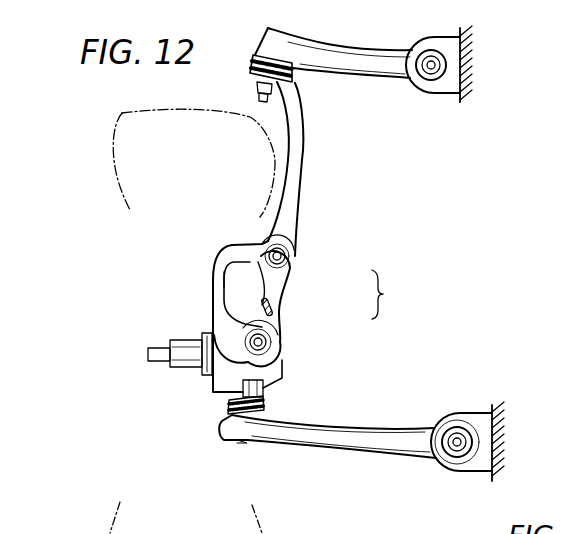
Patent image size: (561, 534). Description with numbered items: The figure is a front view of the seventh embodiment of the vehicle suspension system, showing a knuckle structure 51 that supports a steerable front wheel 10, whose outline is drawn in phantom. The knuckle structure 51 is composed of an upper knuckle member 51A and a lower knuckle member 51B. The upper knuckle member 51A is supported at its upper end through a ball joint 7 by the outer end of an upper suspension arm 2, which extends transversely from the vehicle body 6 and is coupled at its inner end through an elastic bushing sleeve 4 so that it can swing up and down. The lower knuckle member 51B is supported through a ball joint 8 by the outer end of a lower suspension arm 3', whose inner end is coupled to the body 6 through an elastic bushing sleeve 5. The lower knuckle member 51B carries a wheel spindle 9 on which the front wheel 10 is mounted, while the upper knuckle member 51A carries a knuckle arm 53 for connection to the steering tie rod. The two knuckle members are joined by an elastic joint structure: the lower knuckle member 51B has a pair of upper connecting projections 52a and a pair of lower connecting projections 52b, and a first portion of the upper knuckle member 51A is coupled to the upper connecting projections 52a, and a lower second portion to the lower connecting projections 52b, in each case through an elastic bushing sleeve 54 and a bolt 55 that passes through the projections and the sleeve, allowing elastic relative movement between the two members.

The upper suspension arm 2 is at (362, 73).
The lower suspension arm 3' is at (355, 428).
The elastic bushing sleeve 4 is at (422, 75).
The elastic bushing sleeve 5 is at (443, 450).
The body 6 is at (470, 58).
The ball joint 7 is at (294, 73).
The ball joint 8 is at (264, 405).
The wheel spindle 9 is at (176, 364).
The steerable front wheel 10 is at (113, 165).
The knuckle structure 51 is at (389, 294).
The upper knuckle member 51A is at (227, 280).
The lower knuckle member 51B is at (205, 294).
The upper connecting projections 52a is at (268, 242).
The lower connecting projections 52b is at (268, 323).
The knuckle arm 53 is at (240, 307).
The elastic bushing sleeve 54 is at (288, 250).
The bolt 55 is at (282, 261).